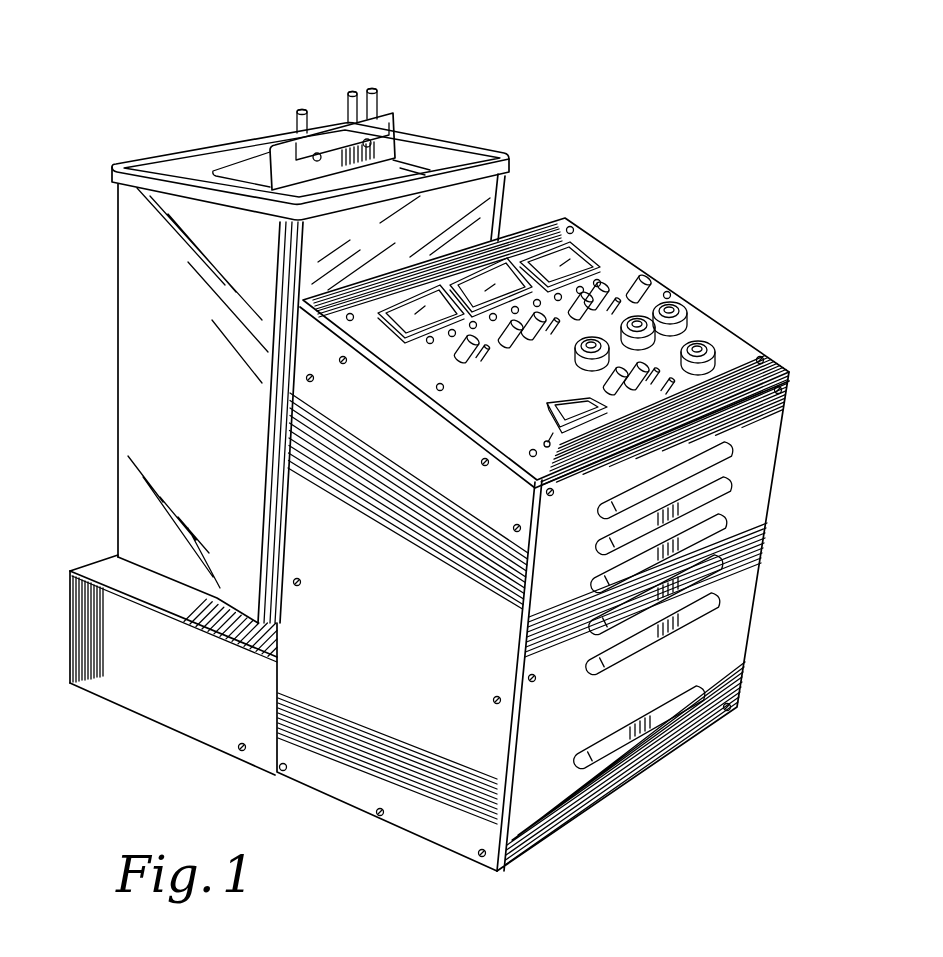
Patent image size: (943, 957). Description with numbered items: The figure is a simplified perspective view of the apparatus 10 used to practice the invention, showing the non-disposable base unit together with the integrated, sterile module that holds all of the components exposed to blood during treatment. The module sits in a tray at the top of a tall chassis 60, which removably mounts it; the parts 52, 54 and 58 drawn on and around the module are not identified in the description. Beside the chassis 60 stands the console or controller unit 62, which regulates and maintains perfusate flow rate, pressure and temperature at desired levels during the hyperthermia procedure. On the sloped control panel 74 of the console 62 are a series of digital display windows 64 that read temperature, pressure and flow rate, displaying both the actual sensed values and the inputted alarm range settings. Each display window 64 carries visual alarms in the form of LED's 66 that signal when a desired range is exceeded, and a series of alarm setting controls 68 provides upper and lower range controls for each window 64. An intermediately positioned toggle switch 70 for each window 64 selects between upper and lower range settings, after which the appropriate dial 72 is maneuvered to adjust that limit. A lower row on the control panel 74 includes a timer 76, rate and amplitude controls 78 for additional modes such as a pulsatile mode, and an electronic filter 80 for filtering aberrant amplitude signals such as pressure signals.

The control unit apparatus 10 is at (690, 152).
The recess in top tray 52 is at (248, 172).
The terminal posts 54 is at (371, 90).
The connector bracket 58 is at (292, 124).
The chassis 60 is at (190, 706).
The console or controller unit 62 is at (438, 818).
The digital display windows 64 is at (512, 258).
The LED's 66 is at (591, 285).
The alarm setting controls 68 is at (662, 252).
The toggle switch 70 is at (558, 326).
The dial 72 is at (641, 273).
The control panel 74 is at (700, 318).
The timer 76 is at (558, 405).
The rate and amplitude controls 78 is at (778, 438).
The electronic filter 80 is at (778, 416).